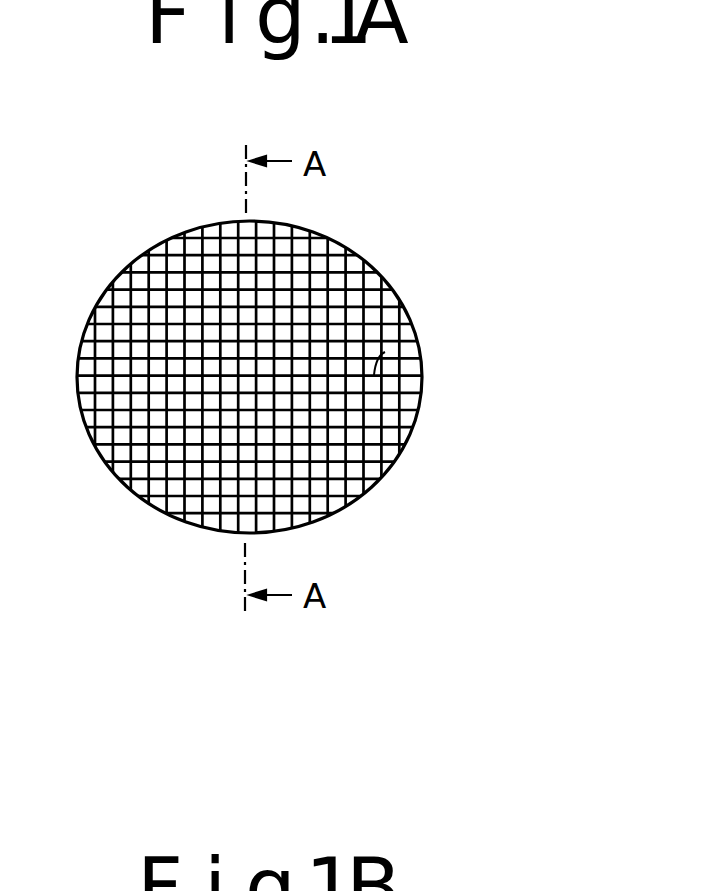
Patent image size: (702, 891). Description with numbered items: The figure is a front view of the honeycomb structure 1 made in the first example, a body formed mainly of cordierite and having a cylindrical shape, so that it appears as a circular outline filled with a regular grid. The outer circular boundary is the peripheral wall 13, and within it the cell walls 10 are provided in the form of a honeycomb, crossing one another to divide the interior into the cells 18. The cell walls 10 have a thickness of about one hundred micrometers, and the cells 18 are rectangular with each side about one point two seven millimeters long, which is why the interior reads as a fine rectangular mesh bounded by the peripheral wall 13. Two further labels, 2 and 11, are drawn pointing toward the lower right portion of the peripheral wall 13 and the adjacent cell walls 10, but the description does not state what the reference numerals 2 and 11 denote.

The honeycomb structure 1 is at (433, 300).
The tire body 2 is at (405, 447).
The cell walls 10 is at (417, 351).
The bead portion 11 is at (405, 429).
The peripheral wall 13 is at (368, 274).
The cells 18 is at (148, 273).